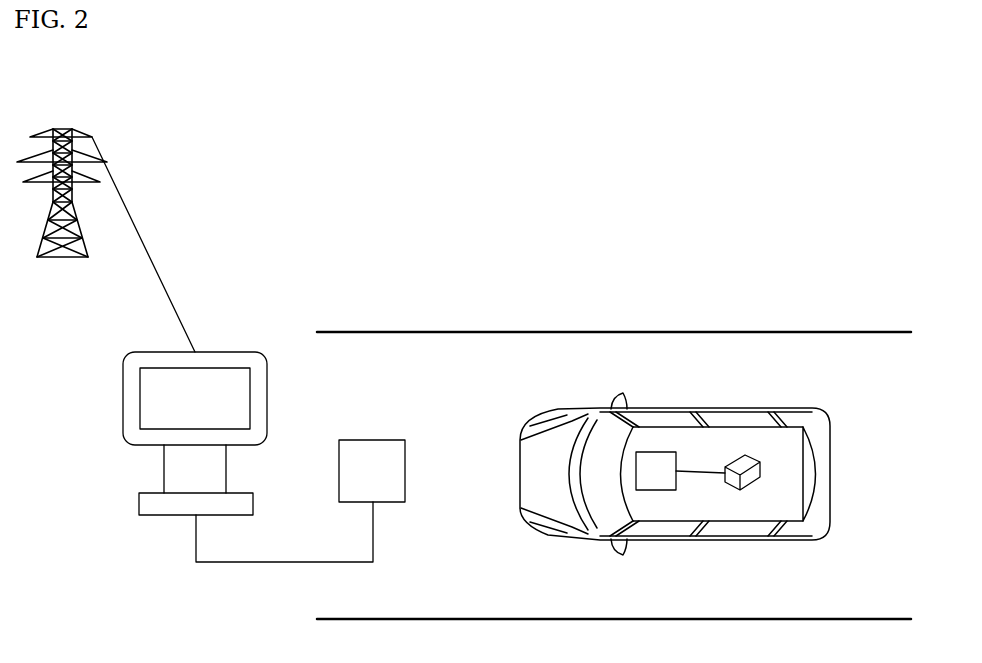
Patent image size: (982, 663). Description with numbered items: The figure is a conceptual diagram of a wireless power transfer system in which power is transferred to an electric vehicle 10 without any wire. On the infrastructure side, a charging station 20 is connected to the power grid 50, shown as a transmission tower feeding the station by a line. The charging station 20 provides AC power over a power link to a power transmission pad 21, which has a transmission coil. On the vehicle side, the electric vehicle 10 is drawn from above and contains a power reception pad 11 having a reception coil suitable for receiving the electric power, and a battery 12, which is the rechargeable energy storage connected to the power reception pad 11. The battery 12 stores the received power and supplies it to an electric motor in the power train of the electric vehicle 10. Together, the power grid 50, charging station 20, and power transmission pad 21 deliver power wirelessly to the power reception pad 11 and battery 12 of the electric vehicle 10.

The power grid 50 is at (62, 128).
The charging station 20 is at (226, 352).
The power transmission pad 21 is at (372, 440).
The electric vehicle 10 is at (692, 413).
The power reception pad 11 is at (655, 452).
The battery 12 is at (745, 456).